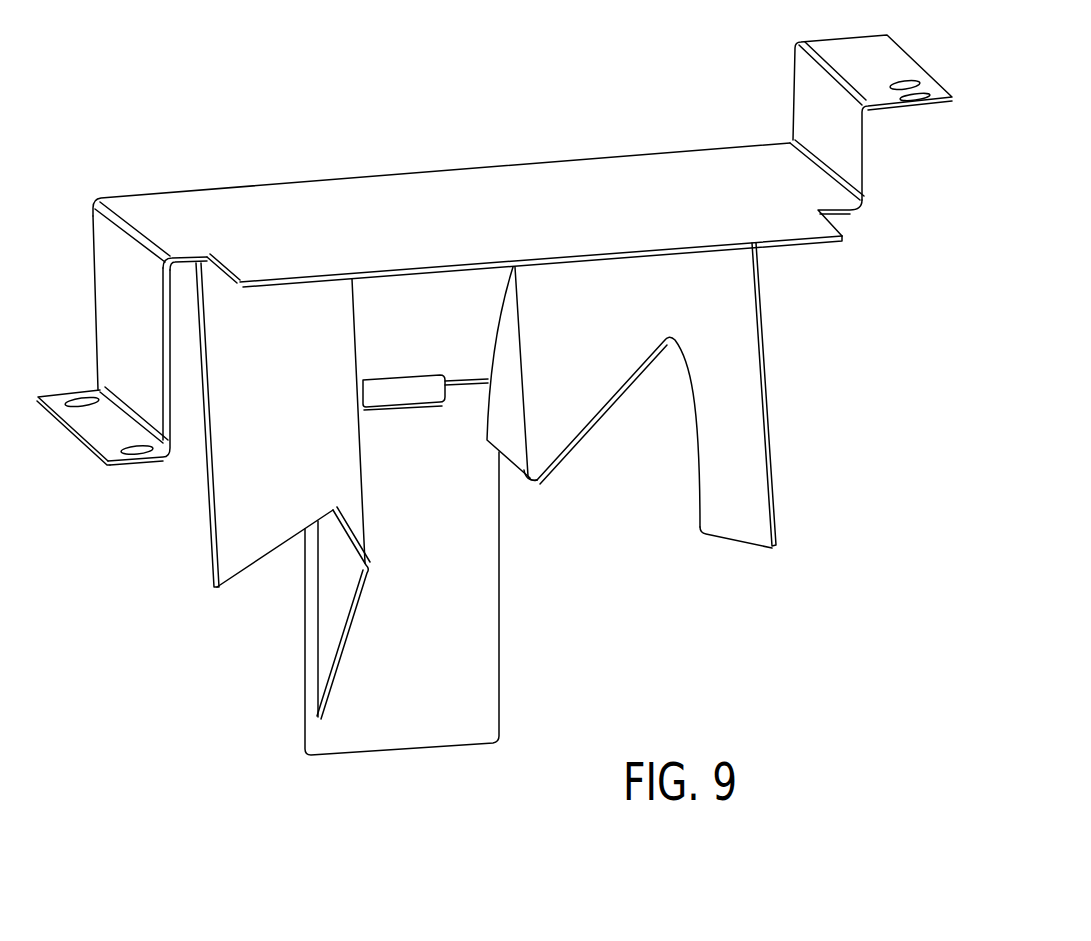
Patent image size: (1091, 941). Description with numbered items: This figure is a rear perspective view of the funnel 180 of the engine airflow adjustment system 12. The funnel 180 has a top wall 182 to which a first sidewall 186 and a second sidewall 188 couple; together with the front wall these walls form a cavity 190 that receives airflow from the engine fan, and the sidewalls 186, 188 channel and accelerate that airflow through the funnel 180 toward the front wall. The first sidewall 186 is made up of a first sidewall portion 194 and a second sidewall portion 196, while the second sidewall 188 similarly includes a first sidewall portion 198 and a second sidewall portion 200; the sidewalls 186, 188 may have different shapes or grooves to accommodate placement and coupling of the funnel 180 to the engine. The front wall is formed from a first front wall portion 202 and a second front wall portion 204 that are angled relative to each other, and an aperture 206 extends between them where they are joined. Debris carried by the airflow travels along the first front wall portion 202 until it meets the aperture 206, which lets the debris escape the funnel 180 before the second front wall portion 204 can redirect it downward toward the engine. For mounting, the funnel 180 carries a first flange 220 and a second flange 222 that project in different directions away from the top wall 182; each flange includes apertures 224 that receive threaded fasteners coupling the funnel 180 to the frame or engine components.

The engine airflow adjustment system 12 is at (818, 634).
The funnel 180 is at (78, 112).
The top wall 182 is at (268, 203).
The first sidewall 186 is at (840, 428).
The second sidewall 188 is at (378, 120).
The cavity 190 is at (552, 312).
The first sidewall portion 194 is at (598, 380).
The second sidewall portion 196 is at (510, 447).
The first sidewall portion 198 is at (223, 535).
The second sidewall portion 200 is at (332, 610).
The first front wall portion 202 is at (470, 293).
The second front wall portion 204 is at (478, 660).
The aperture 206 is at (423, 419).
The first flange 220 is at (892, 63).
The second flange 222 is at (92, 427).
The apertures 224 is at (83, 400).